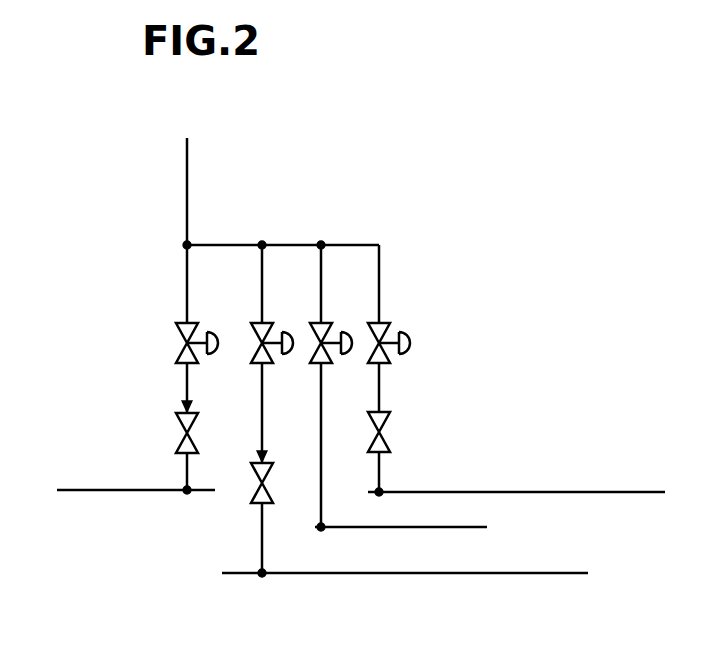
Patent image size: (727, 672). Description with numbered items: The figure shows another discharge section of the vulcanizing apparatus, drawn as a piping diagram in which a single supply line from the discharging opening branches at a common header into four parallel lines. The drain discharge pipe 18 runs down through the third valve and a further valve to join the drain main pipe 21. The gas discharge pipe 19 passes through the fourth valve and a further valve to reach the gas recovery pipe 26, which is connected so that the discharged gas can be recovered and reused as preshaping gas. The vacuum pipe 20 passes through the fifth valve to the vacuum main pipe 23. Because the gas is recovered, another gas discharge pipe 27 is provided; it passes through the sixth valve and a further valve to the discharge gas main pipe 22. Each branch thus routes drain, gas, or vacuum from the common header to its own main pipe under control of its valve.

The drain discharge pipe 18 is at (186, 280).
The gas discharge pipe 19 is at (258, 276).
The vacuum pipe 20 is at (324, 273).
The another gas discharge pipe 27 is at (381, 272).
The drain main pipe 21 is at (122, 493).
The discharge gas main pipe 22 is at (655, 493).
The vacuum main pipe 23 is at (468, 528).
The gas recovery pipe 26 is at (528, 575).